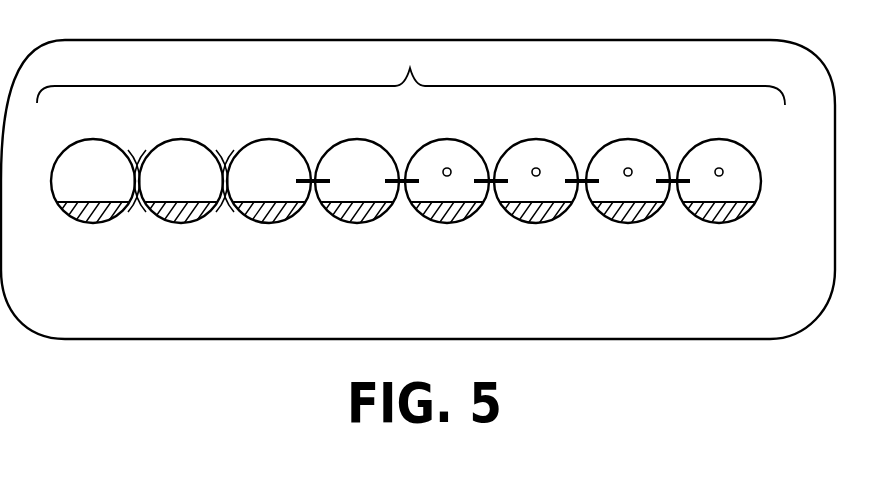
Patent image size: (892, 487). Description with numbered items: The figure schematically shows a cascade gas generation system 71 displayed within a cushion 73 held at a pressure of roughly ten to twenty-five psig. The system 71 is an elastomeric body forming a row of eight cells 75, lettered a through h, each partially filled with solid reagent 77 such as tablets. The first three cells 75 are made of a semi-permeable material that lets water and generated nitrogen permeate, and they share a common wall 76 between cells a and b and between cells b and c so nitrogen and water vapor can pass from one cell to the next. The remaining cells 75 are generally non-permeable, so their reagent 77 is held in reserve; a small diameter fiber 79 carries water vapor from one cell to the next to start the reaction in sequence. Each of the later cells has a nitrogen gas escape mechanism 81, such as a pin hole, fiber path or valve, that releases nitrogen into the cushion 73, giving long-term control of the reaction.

The cascade gas generation system 71 is at (602, 262).
The cushion 73 is at (602, 339).
The cells 75 is at (411, 76).
The common wall 76 is at (131, 157).
The solid reagent 77 is at (87, 216).
The small diameter fiber 79 is at (310, 180).
The nitrogen gas escape mechanism 81 is at (450, 168).